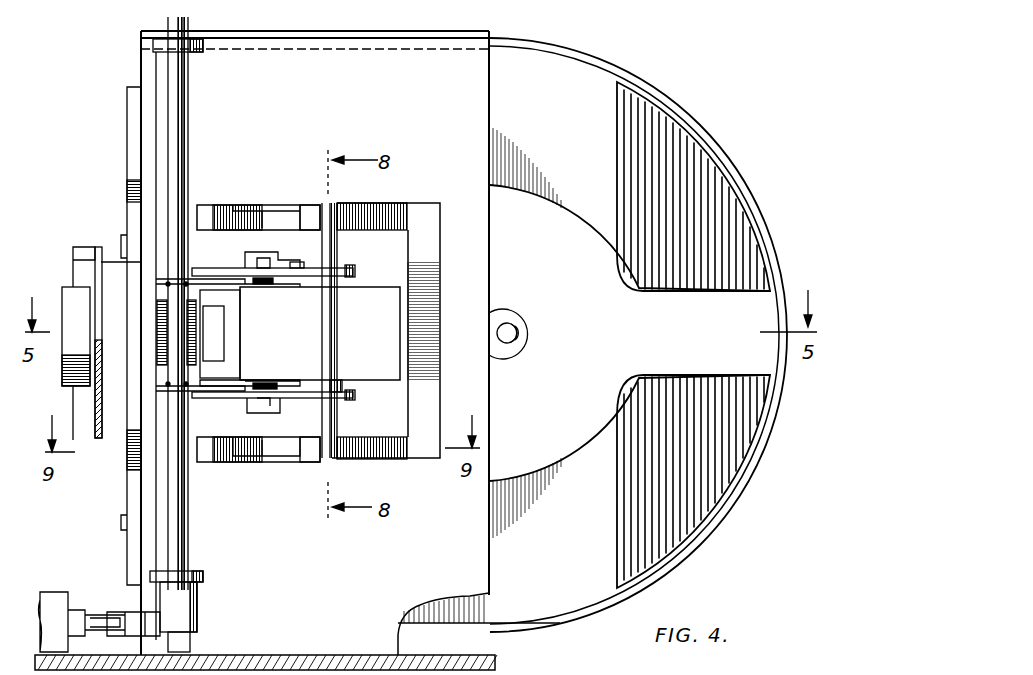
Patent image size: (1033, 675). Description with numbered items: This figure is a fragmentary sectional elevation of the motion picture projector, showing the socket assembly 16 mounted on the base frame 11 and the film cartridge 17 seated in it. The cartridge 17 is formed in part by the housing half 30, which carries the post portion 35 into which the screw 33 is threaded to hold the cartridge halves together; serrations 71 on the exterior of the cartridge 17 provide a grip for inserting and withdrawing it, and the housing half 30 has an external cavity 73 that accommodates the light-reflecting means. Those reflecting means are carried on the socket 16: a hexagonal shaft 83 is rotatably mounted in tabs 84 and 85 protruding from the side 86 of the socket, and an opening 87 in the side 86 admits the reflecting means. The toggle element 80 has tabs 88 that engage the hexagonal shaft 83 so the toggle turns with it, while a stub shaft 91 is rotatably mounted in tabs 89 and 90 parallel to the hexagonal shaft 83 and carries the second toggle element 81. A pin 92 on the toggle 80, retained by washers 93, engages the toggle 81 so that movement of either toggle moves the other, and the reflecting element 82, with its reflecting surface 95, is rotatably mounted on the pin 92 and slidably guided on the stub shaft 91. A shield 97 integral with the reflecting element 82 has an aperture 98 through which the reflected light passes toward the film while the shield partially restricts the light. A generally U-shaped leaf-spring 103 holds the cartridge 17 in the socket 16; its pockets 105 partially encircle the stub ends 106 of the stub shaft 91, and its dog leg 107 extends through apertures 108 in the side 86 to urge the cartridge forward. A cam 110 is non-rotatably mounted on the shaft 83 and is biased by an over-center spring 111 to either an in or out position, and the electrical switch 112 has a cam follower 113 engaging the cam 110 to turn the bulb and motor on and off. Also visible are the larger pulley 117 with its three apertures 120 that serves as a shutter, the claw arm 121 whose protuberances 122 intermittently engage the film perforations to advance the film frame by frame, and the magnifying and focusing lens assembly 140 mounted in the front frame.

The base frame 11 is at (496, 660).
The socket assembly 16 is at (492, 31).
The film cartridge 17 is at (634, 72).
The housing half 30 is at (578, 626).
The screw 33 is at (512, 325).
The post portion 35 is at (519, 334).
The serrations 71 is at (740, 440).
The external cavity 73 is at (630, 333).
The toggle element 80 is at (160, 330).
The toggle element 81 is at (291, 266).
The reflecting element 82 is at (392, 292).
The hexagonal shaft 83 is at (182, 107).
The tab 84 is at (192, 571).
The tab 85 is at (160, 38).
The side 86 is at (385, 76).
The opening 87 is at (218, 270).
The tabs 88 is at (165, 285).
The tab 89 is at (352, 270).
The tab 90 is at (356, 400).
The stub shaft 91 is at (334, 243).
The pin 92 is at (268, 262).
The washers 93 is at (276, 282).
The reflecting surface 95 is at (320, 333).
The shield 97 is at (240, 318).
The aperture 98 is at (222, 330).
The leaf-spring 103 is at (422, 462).
The pockets 105 is at (318, 460).
The stub ends 106 is at (340, 210).
The dog leg 107 is at (237, 218).
The apertures 108 is at (278, 208).
The cam 110 is at (197, 598).
The over-center spring 111 is at (192, 640).
The electrical switch 112 is at (62, 576).
The cam follower 113 is at (128, 592).
The pulley 117 is at (78, 247).
The apertures 120 is at (73, 252).
The claw arm 121 is at (114, 336).
The protuberances 122 is at (141, 262).
The lens assembly 140 is at (63, 357).